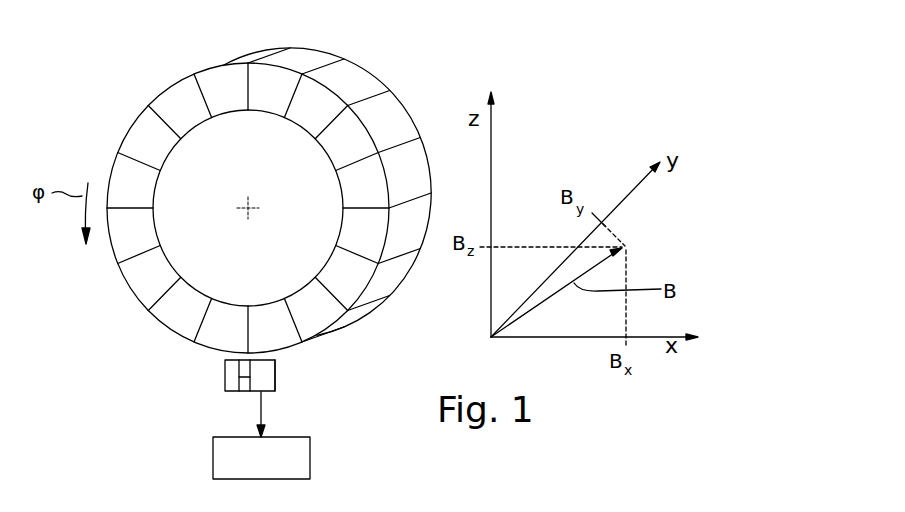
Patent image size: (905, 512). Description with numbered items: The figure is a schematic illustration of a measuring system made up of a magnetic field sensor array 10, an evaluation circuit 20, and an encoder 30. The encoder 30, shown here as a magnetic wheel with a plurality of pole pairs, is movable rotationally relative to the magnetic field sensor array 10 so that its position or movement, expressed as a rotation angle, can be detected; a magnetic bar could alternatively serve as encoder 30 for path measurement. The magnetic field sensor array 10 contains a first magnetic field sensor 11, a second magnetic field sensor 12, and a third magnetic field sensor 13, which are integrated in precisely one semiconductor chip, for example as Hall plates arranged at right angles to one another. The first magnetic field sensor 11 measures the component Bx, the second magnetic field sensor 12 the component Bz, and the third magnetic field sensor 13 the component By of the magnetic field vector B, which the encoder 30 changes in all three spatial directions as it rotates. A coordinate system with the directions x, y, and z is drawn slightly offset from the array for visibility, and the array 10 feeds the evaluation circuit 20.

The encoder 30 is at (172, 83).
The magnetic field sensor array 10 is at (226, 372).
The first magnetic field sensor 11 is at (248, 375).
The second magnetic field sensor 12 is at (246, 364).
The third magnetic field sensor 13 is at (274, 391).
The evaluation circuit 20 is at (293, 459).